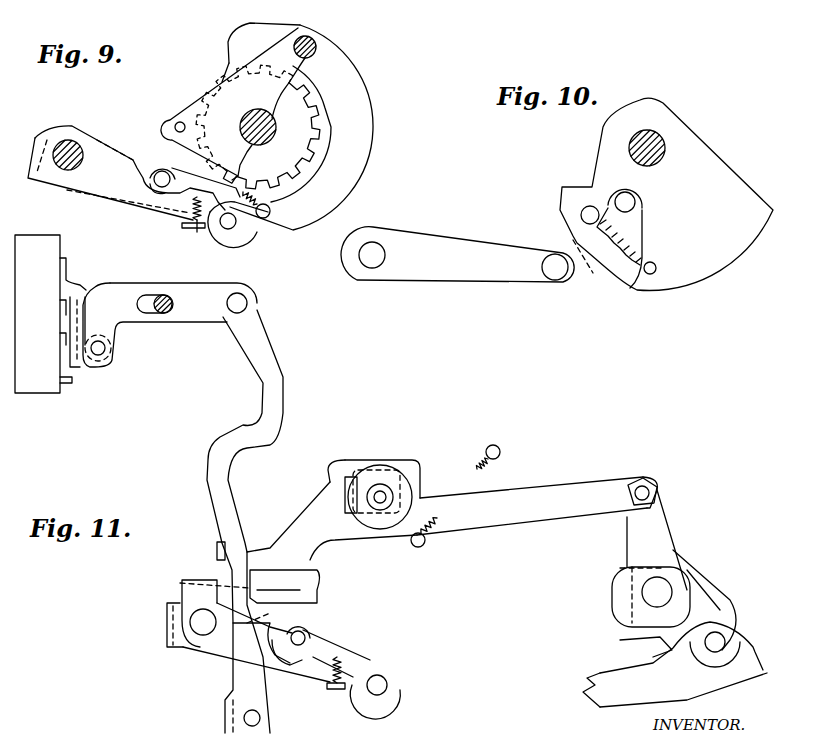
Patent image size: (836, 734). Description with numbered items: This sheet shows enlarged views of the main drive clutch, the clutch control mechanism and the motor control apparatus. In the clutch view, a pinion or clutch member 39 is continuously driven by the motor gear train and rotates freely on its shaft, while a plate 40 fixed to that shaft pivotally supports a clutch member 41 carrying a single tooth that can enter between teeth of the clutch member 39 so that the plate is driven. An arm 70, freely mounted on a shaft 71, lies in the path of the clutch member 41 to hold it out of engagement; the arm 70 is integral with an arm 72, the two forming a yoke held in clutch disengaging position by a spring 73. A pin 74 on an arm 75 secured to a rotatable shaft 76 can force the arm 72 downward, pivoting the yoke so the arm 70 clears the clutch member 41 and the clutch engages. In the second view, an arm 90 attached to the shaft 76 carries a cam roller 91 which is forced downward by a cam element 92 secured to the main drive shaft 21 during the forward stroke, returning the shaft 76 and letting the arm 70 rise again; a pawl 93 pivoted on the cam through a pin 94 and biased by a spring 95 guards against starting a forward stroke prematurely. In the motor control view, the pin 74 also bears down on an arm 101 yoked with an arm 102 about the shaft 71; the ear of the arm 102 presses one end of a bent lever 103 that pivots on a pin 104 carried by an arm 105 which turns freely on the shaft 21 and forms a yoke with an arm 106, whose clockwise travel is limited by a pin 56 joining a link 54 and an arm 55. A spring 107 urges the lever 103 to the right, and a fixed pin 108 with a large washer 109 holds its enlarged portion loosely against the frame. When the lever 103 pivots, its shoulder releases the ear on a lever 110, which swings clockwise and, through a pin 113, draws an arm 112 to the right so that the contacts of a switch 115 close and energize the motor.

In FIG. 10, the main drive shaft 21 is at (660, 150).
In FIG. 11, the main drive shaft 21 is at (642, 593).
In FIG. 9, the pinion or clutch member 39 is at (316, 157).
In FIG. 9, the plate 40 is at (278, 42).
In FIG. 9, the clutch member 41 is at (358, 96).
In FIG. 11, the link 54 is at (587, 686).
In FIG. 11, the arm 55 is at (660, 637).
In FIG. 11, the pin 56 is at (715, 648).
In FIG. 9, the arm 70 is at (217, 196).
In FIG. 11, the arm 70 is at (362, 662).
In FIG. 9, the shaft 71 is at (70, 140).
In FIG. 11, the shaft 71 is at (190, 622).
In FIG. 9, the arm 72 is at (163, 190).
In FIG. 11, the arm 72 is at (300, 663).
In FIG. 9, the spring 73 is at (198, 228).
In FIG. 9, the pin 74 is at (159, 183).
In FIG. 11, the pin 74 is at (303, 636).
In FIG. 9, the arm 75 is at (181, 172).
In FIG. 11, the arm 75 is at (330, 637).
In FIG. 9, the rotatable shaft 76 is at (240, 225).
In FIG. 10, the rotatable shaft 76 is at (378, 263).
In FIG. 11, the rotatable shaft 76 is at (387, 684).
In FIG. 10, the arm 90 is at (497, 271).
In FIG. 10, the cam roller 91 is at (557, 272).
In FIG. 10, the cam element 92 is at (562, 200).
In FIG. 10, the pawl 93 is at (617, 272).
In FIG. 10, the pin 94 is at (631, 203).
In FIG. 10, the spring 95 is at (657, 268).
In FIG. 11, the arm 101 is at (282, 650).
In FIG. 11, the arm 102 is at (297, 593).
In FIG. 11, the bent lever 103 is at (307, 627).
In FIG. 11, the pin 104 is at (658, 488).
In FIG. 11, the arm 105 is at (662, 528).
In FIG. 11, the arm 106 is at (702, 605).
In FIG. 11, the spring 107 is at (498, 466).
In FIG. 11, the fixed pin 108 is at (386, 496).
In FIG. 11, the large washer 109 is at (368, 475).
In FIG. 11, the lever 110 is at (273, 408).
In FIG. 11, the arm 112 is at (193, 318).
In FIG. 11, the pin 113 is at (243, 305).
In FIG. 11, the switch 115 is at (38, 382).